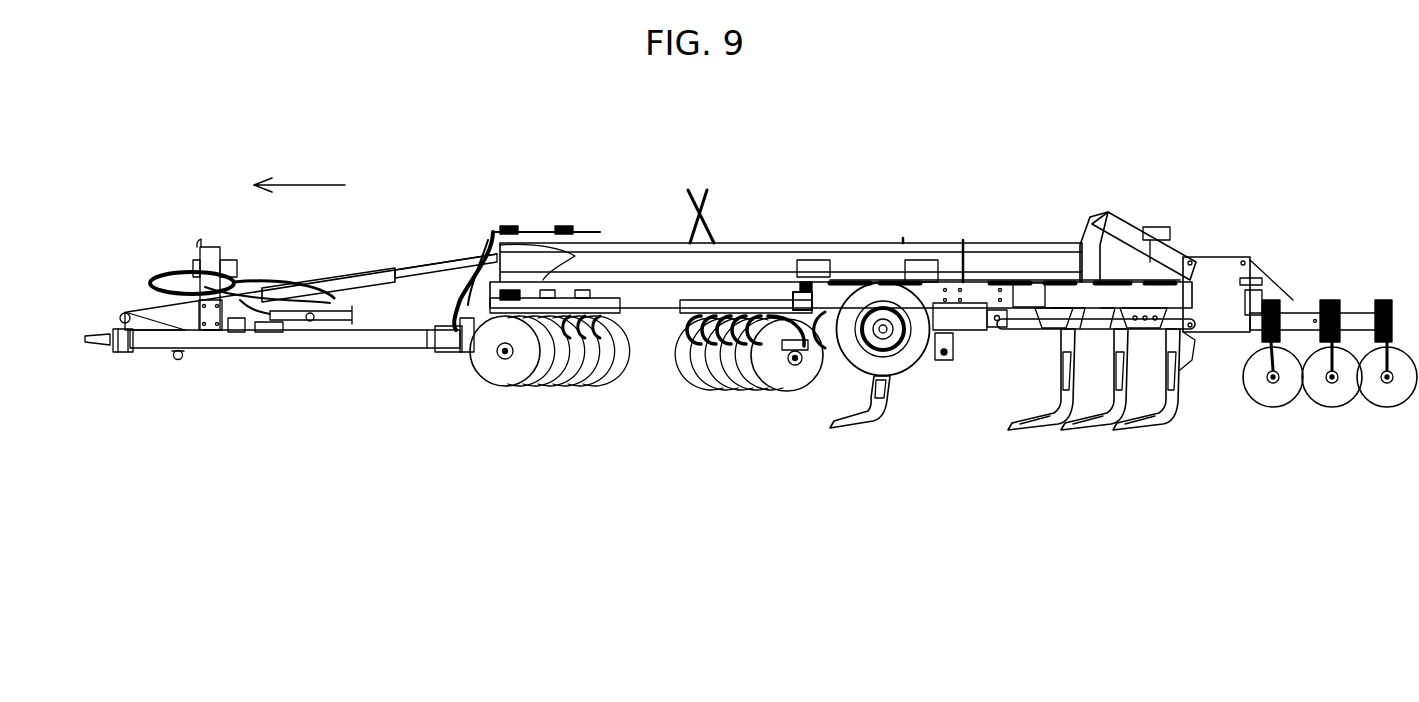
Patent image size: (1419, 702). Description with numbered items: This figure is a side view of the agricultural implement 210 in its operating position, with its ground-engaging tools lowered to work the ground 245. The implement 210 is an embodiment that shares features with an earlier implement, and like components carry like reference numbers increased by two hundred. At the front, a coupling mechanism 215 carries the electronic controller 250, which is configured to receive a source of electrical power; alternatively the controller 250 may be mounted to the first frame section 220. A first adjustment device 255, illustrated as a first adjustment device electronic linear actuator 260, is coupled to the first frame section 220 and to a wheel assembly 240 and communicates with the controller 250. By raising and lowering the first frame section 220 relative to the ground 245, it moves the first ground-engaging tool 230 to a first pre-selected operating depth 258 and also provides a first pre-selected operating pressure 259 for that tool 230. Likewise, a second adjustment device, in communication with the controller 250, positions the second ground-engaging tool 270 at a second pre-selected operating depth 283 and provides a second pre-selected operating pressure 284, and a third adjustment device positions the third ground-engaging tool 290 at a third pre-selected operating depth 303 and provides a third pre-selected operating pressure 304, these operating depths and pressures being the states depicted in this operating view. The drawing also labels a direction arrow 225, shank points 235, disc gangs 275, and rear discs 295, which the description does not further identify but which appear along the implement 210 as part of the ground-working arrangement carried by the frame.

The agricultural implement 210 is at (1028, 106).
The coupling mechanism 215 is at (283, 350).
The first frame section 220 is at (632, 262).
The direction of travel 225 is at (302, 184).
The first ground-engaging tool 230 is at (850, 290).
The shanks 235 is at (870, 413).
The wheel assembly 240 is at (832, 372).
The ground 245 is at (510, 497).
The electronic controller 250 is at (228, 262).
The first adjustment device 255 is at (935, 356).
The first pre-selected operating depth 258 is at (1156, 452).
The first pre-selected operating pressure 259 is at (936, 490).
The first adjustment device electronic linear actuator 260 is at (928, 352).
The second ground-engaging tool 270 is at (496, 232).
The disc gangs 275 is at (492, 372).
The second pre-selected operating depth 283 is at (582, 470).
The second pre-selected operating pressure 284 is at (632, 480).
The third ground-engaging tool 290 is at (1380, 300).
The rear closing discs 295 is at (1272, 407).
The third pre-selected operating depth 303 is at (1271, 459).
The third pre-selected operating pressure 304 is at (1364, 498).